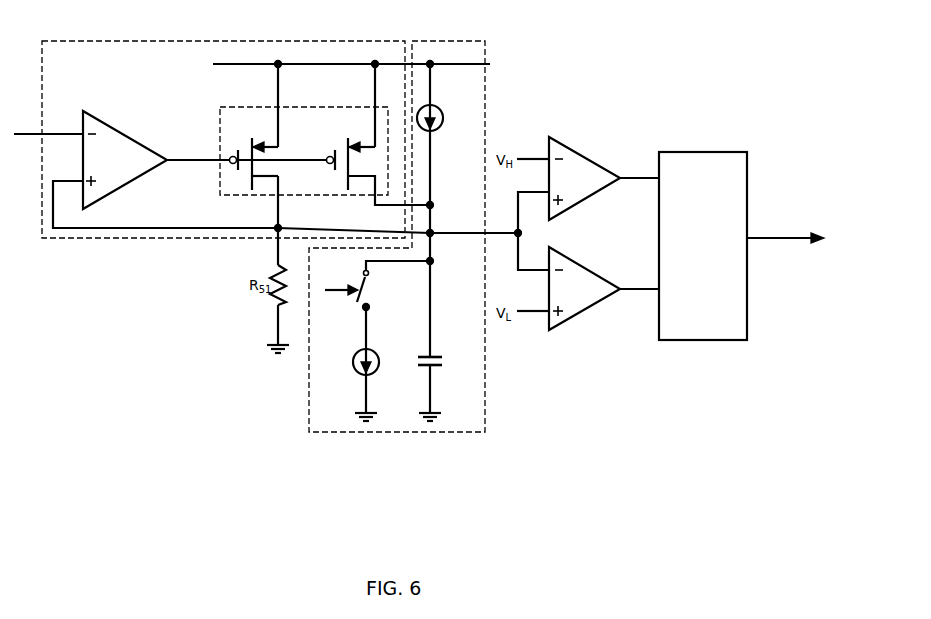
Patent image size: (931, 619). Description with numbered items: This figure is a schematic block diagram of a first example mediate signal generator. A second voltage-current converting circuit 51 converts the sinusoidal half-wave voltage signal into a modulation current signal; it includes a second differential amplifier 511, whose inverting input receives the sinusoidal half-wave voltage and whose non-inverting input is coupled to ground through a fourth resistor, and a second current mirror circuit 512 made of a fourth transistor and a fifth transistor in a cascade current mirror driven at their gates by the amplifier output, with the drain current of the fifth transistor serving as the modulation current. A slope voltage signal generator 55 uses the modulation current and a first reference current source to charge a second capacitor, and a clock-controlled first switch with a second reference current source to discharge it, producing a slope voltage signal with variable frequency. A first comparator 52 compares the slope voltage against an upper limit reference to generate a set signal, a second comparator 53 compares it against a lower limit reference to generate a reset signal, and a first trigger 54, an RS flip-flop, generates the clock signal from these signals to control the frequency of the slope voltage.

The second voltage-current converting circuit 51 is at (125, 41).
The second differential amplifier 511 is at (125, 160).
The second current mirror circuit 512 is at (220, 108).
The slope voltage signal generator 55 is at (462, 41).
The first comparator 52 is at (604, 178).
The second comparator 53 is at (604, 288).
The first trigger 54 is at (741, 246).